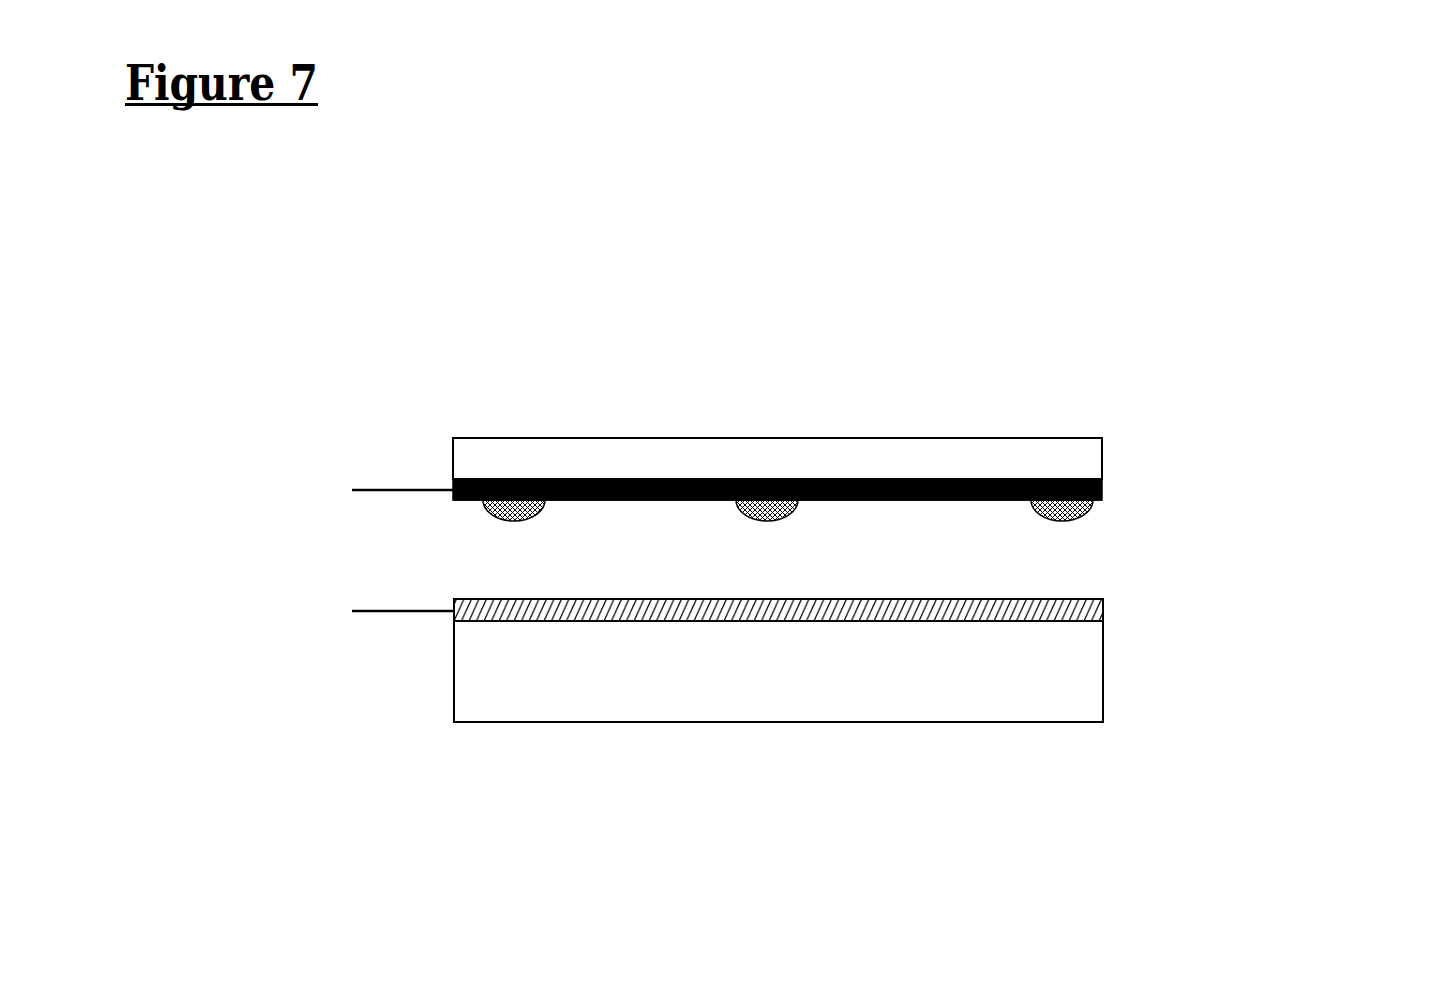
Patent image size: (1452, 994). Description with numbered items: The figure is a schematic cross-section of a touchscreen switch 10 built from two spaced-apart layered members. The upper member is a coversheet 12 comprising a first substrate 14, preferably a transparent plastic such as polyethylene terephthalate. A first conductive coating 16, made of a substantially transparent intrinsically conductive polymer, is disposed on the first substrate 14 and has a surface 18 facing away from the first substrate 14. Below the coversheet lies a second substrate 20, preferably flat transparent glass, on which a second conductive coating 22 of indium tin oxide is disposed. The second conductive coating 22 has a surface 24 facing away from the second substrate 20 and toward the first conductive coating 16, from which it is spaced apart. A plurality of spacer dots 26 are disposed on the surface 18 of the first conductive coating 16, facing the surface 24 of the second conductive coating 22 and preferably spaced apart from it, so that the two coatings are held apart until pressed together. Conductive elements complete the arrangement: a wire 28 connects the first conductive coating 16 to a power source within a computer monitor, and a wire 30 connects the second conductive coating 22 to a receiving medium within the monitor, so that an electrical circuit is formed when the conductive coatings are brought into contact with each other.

The switch 10 is at (890, 572).
The coversheet 12 is at (838, 440).
The first substrate 14 is at (644, 438).
The first conductive coating 16 is at (918, 478).
The surface 18 is at (635, 500).
The second substrate 20 is at (637, 722).
The second conductive coating 22 is at (829, 622).
The surface 24 is at (919, 598).
The spacer dots 26 is at (514, 522).
The wire 28 is at (402, 490).
The wire 30 is at (403, 612).